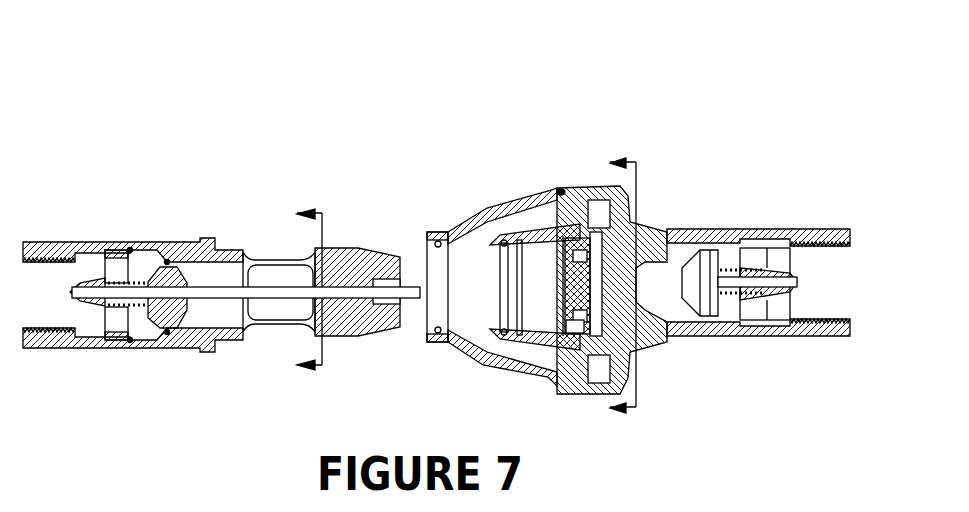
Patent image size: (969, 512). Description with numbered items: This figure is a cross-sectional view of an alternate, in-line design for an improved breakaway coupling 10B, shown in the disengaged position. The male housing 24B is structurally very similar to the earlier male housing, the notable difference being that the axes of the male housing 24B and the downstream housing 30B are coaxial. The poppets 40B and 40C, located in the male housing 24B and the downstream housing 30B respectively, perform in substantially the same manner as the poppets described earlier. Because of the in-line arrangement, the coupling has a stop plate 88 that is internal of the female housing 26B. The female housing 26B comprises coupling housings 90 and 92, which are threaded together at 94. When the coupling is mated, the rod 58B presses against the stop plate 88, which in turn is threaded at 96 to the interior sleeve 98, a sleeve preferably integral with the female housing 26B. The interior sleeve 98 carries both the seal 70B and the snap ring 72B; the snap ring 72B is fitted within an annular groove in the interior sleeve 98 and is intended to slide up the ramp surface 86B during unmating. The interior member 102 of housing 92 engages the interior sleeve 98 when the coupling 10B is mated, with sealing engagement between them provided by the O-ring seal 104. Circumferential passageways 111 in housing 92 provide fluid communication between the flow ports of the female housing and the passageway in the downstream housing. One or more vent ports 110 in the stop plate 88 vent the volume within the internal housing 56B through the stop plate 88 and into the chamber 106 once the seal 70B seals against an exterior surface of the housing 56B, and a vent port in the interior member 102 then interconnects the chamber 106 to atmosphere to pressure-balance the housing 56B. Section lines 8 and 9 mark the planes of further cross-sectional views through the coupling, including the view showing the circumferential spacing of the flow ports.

The breakaway coupling 10B is at (443, 125).
The male housing 24B is at (66, 244).
The poppet 40B is at (158, 268).
The internal housing 56B is at (365, 255).
The rod 58B is at (227, 296).
The ramp surface 86B is at (354, 334).
The section line 8- 8 is at (300, 289).
The coupling housing 90 is at (463, 232).
The o-ring seal 70B is at (508, 242).
The snap ring 72B is at (520, 240).
The threaded connection 94 is at (576, 191).
The circumferential passageways 111 is at (600, 212).
The O-ring seal 104 is at (583, 272).
The stop plate 88 is at (597, 280).
The chamber 106 is at (612, 265).
The poppet 40C is at (712, 268).
The female housing 26B is at (505, 367).
The interior sleeve 98 is at (548, 340).
The vent ports 110 is at (571, 320).
The threaded connection 96 is at (574, 318).
The coupling housing 92 is at (650, 337).
The interior member 102 is at (622, 313).
The section line 9- 9 is at (613, 286).
The downstream housing 30B is at (806, 327).